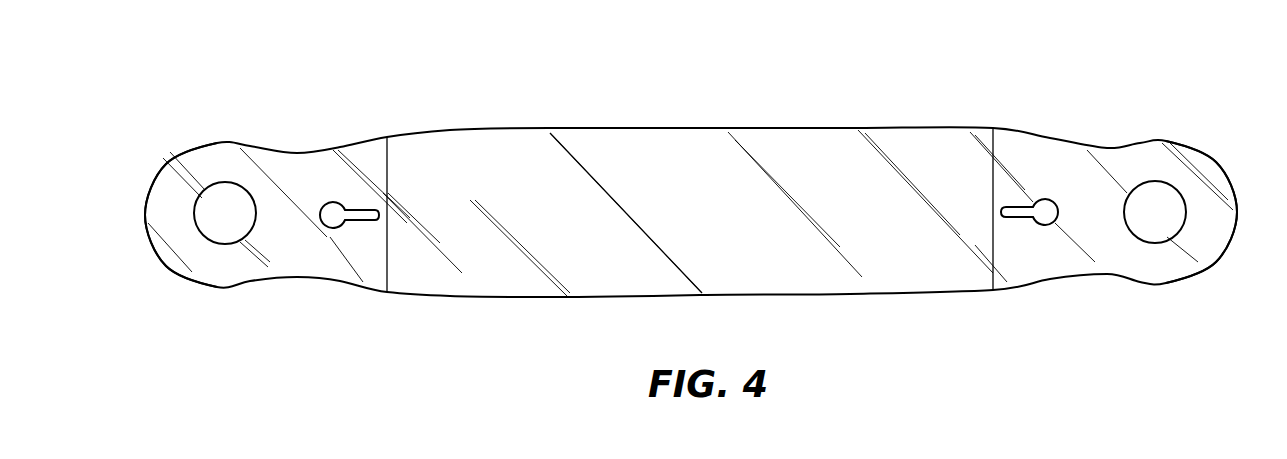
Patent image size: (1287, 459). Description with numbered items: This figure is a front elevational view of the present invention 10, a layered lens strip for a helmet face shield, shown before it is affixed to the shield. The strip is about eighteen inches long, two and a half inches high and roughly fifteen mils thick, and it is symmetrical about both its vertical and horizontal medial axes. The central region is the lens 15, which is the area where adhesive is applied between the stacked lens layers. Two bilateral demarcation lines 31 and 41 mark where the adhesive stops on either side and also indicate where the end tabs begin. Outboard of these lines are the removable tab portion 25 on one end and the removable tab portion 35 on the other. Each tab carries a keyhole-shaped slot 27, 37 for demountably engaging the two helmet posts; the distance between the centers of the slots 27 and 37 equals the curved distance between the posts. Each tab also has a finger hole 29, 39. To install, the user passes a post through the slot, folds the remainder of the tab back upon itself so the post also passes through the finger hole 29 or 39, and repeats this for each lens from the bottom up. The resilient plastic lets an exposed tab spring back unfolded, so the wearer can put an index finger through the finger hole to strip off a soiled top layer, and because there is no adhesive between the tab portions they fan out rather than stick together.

The present invention 10 is at (645, 83).
The lens 15 is at (832, 167).
The removable tab portion 25 is at (1105, 147).
The keyhole-shaped slot 27 is at (1045, 228).
The finger hole 29 is at (1150, 224).
The demarcation line 31 is at (993, 133).
The removable tab portion 35 is at (222, 142).
The keyhole-shaped slot 37 is at (330, 230).
The finger hole 39 is at (227, 232).
The demarcation line 41 is at (387, 137).